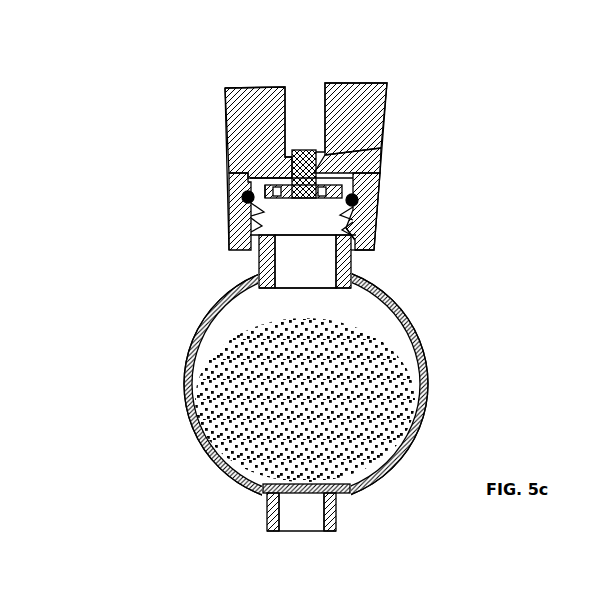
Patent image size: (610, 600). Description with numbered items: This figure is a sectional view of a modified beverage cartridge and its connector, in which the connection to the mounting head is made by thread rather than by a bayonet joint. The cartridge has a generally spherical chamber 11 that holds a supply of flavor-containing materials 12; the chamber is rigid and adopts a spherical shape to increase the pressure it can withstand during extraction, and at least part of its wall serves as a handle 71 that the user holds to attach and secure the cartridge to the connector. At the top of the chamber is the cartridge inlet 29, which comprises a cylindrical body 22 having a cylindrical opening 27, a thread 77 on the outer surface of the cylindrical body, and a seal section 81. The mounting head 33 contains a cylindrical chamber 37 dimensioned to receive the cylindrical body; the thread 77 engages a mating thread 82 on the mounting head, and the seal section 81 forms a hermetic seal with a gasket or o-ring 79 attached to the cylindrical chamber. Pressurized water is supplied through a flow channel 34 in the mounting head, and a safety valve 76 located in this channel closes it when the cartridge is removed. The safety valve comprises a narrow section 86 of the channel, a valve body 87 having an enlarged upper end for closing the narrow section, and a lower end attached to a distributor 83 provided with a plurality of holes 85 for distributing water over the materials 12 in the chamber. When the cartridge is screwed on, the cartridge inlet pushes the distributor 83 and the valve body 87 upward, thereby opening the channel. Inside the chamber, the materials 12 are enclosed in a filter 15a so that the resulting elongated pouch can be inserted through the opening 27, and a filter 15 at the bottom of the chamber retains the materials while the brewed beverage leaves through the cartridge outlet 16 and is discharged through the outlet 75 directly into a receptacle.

The spherical chamber 11 is at (186, 375).
The flavor-containing materials 12 is at (367, 412).
The filter 15 is at (297, 494).
The filter 15a is at (383, 477).
The cartridge outlet 16 is at (370, 510).
The cylindrical body 22 is at (258, 276).
The cylindrical opening 27 is at (306, 270).
The cartridge inlet 29 is at (376, 270).
The mounting head 33 is at (398, 102).
The flow channel 34 is at (303, 102).
The cylindrical chamber 37 is at (353, 238).
The handle 71 is at (425, 358).
The outlet 75 is at (308, 507).
The safety valve 76 is at (307, 143).
The thread 77 is at (260, 262).
The gasket or o-ring 79 is at (357, 198).
The seal section 81 is at (246, 238).
The thread 82 is at (243, 199).
The distributor 83 is at (255, 178).
The holes 85 is at (328, 225).
The narrow section 86 is at (378, 166).
The valve body 87 is at (382, 142).